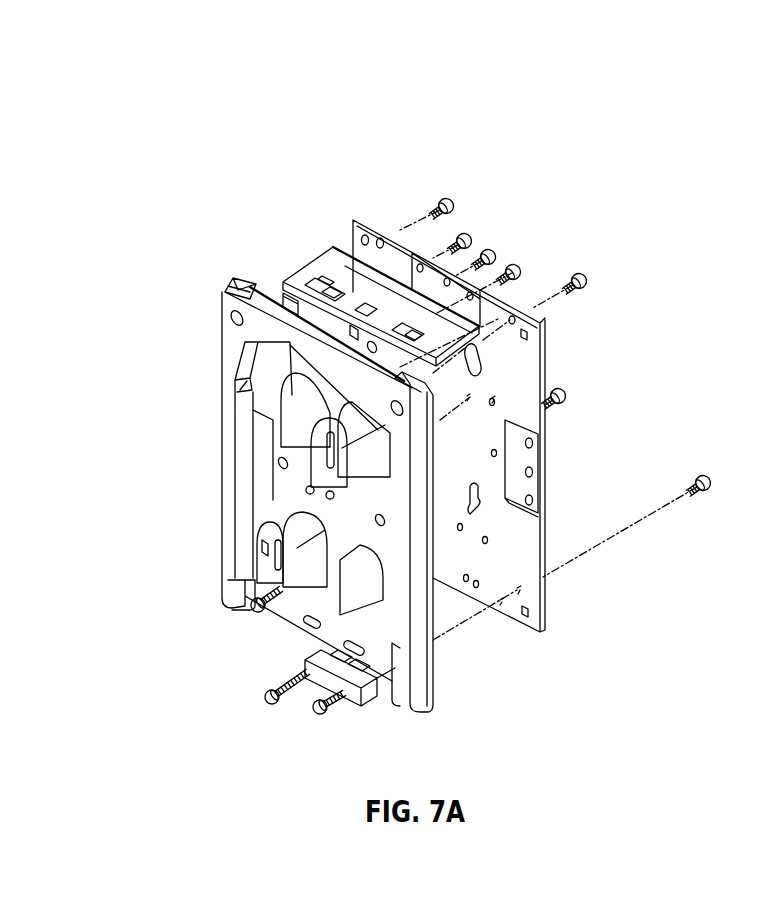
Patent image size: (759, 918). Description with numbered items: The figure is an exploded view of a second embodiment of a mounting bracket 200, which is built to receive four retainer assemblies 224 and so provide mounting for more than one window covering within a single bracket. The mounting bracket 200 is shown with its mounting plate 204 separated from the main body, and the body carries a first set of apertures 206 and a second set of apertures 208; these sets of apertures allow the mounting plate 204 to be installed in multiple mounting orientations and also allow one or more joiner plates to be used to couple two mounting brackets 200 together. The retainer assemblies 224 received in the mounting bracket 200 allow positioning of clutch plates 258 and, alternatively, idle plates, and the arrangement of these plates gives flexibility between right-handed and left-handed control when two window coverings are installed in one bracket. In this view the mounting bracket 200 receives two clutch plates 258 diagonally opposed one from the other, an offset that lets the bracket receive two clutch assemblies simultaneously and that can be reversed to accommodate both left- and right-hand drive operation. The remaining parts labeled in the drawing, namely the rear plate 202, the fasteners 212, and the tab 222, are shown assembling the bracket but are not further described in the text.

The mounting bracket 200 is at (240, 150).
The rear plate 202 is at (366, 214).
The mounting plate 204 is at (306, 255).
The first set of apertures 206 is at (473, 296).
The second set of apertures 208 is at (543, 501).
The fasteners 212 is at (473, 230).
The tab 222 is at (234, 280).
The retainer assembly 224 is at (262, 553).
The clutch plate 258 is at (266, 546).